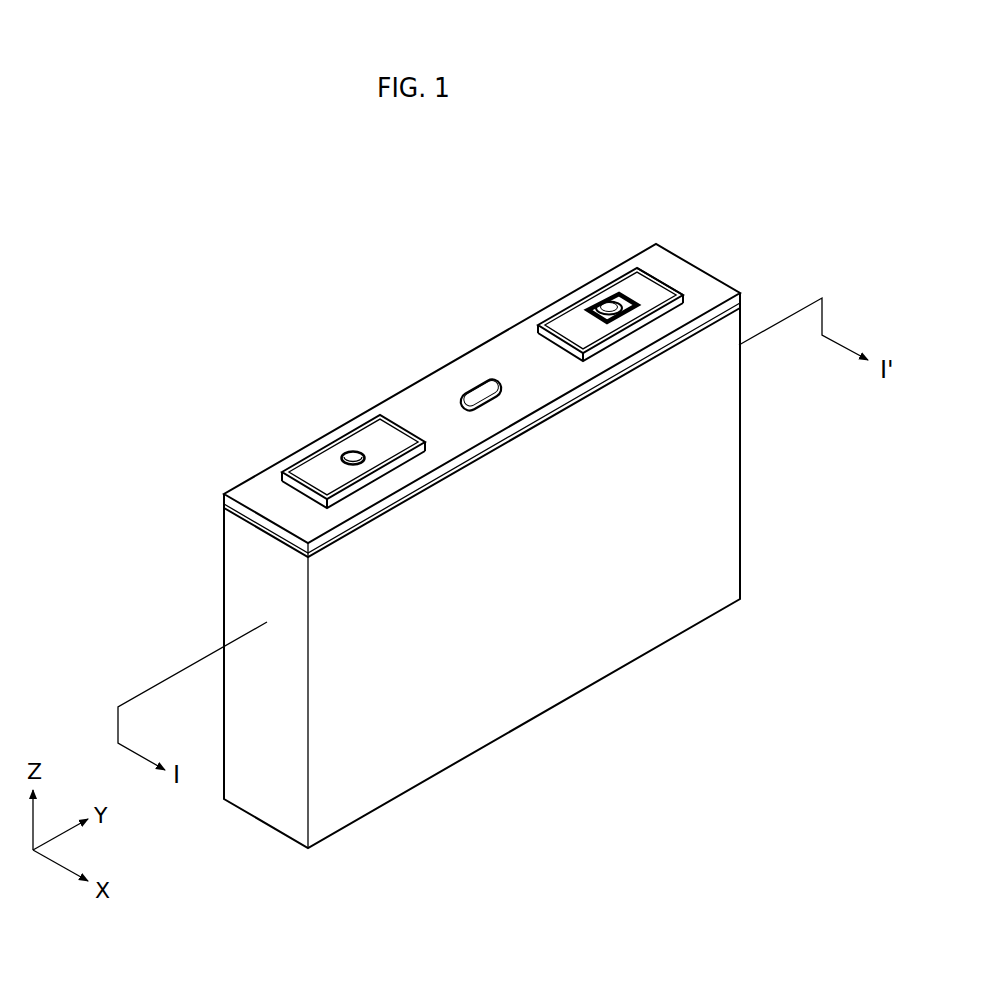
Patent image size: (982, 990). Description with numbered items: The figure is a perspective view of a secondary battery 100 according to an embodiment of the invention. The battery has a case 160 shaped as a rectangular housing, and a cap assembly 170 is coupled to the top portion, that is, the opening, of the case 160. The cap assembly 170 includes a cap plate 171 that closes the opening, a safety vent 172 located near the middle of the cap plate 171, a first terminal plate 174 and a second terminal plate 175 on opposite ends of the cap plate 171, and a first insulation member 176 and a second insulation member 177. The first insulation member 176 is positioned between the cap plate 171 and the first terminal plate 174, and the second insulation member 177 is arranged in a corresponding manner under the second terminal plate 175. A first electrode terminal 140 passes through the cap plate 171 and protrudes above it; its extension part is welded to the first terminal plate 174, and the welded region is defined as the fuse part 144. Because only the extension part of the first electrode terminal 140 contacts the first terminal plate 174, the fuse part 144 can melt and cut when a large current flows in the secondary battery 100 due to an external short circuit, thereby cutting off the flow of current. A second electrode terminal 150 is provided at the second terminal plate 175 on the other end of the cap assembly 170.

The secondary battery 100 is at (65, 196).
The first electrode terminal 140 is at (606, 304).
The fuse part 144 is at (631, 298).
The second electrode terminal 150 is at (346, 455).
The case 160 is at (728, 473).
The cap assembly 170 is at (364, 328).
The cap plate 171 is at (512, 353).
The safety vent 172 is at (470, 384).
The first terminal plate 174 is at (568, 320).
The second terminal plate 175 is at (375, 430).
The first insulation member 176 is at (684, 300).
The second insulation member 177 is at (282, 480).